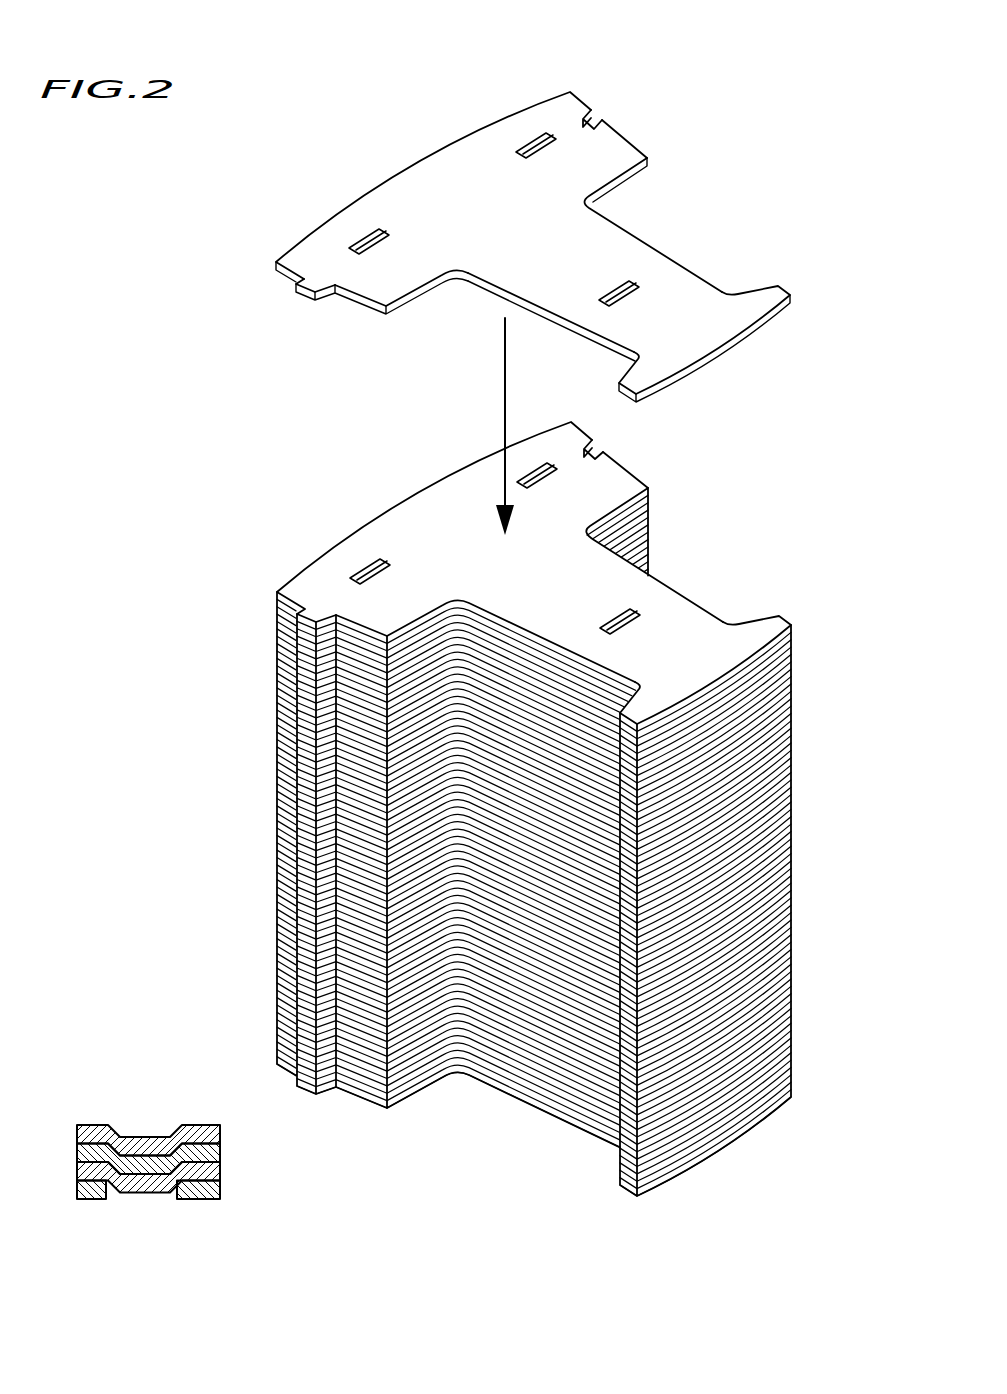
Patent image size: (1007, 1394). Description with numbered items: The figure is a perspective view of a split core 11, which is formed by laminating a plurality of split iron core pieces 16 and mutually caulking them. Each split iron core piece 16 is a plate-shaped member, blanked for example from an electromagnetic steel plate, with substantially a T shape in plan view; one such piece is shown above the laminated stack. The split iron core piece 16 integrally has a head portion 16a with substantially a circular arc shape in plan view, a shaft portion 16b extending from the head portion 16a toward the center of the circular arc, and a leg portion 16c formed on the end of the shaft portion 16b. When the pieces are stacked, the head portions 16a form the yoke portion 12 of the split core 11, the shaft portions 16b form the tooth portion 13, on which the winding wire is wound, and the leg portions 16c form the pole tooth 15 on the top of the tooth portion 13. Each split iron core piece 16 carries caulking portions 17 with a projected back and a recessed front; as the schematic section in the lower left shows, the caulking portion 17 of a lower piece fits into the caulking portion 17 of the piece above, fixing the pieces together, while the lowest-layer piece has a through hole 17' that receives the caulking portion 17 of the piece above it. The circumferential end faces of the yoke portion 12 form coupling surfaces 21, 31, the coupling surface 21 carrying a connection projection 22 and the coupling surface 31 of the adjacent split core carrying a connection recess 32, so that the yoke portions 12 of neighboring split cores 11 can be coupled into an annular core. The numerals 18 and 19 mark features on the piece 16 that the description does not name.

The split core 11 is at (504, 789).
The yoke portion 12 is at (430, 515).
The tooth portion 13 is at (698, 610).
The pole tooth 15 is at (776, 619).
The split iron core piece 16 is at (500, 621).
The head portion 16a is at (403, 192).
The shaft portion 16b is at (611, 243).
The leg portion 16c is at (712, 320).
The caulking portion 17 is at (453, 581).
The through hole 17' is at (148, 1190).
The projection 18 is at (297, 288).
The notch 19 is at (590, 124).
The coupling surface 21 is at (362, 730).
The connection projection 22 is at (310, 656).
The coupling surface 31 is at (638, 470).
The connection recess 32 is at (592, 450).